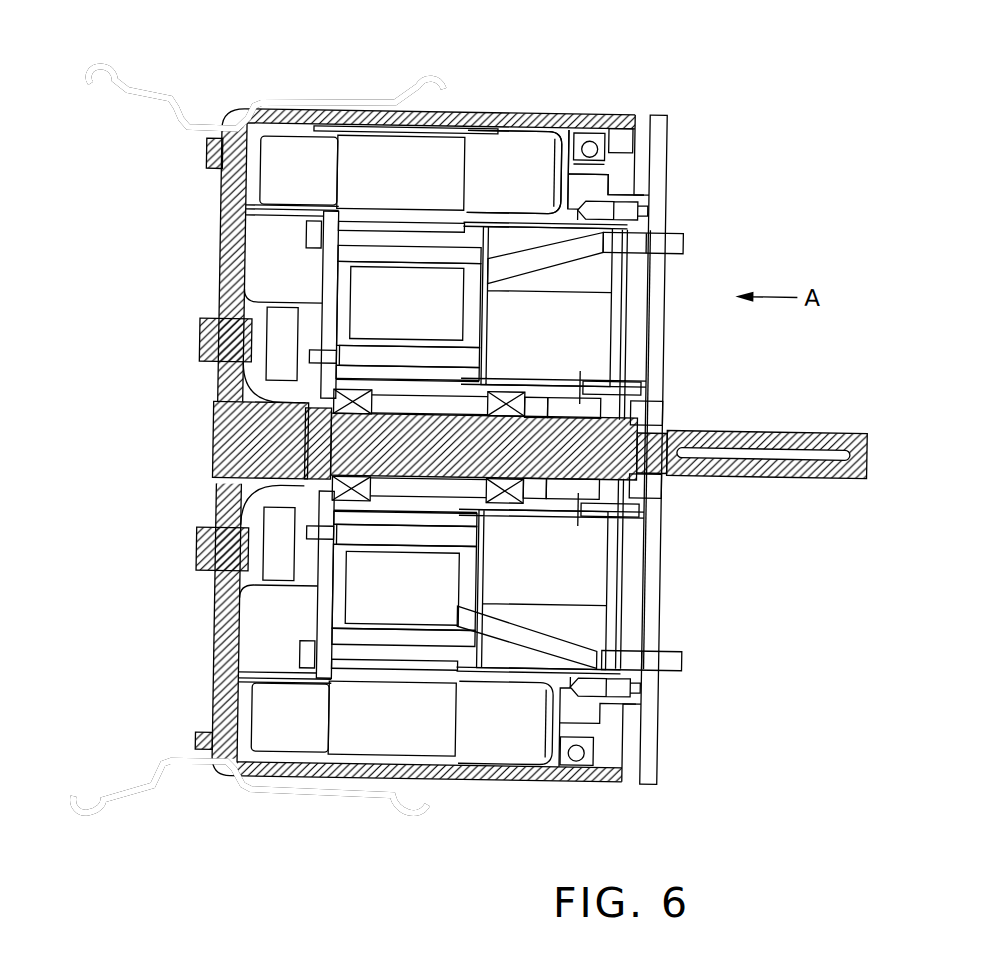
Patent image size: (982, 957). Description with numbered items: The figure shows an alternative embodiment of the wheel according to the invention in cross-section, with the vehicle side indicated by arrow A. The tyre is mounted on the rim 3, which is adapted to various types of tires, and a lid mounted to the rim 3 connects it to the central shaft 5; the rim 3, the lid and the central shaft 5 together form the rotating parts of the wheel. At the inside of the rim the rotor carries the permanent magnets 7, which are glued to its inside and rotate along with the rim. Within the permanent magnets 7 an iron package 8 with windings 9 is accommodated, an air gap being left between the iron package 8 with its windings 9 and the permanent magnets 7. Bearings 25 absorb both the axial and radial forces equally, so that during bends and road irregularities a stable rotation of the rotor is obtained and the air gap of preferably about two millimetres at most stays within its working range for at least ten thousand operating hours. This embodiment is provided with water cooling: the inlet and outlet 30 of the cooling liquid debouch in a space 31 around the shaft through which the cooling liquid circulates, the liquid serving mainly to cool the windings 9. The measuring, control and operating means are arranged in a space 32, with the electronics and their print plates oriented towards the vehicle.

The rim 3 is at (436, 78).
The central shaft 5 is at (762, 428).
The permanent magnets 7 is at (462, 124).
The iron package 8 is at (516, 152).
The windings 9 is at (440, 175).
The bearings 25 is at (585, 147).
The inlet and outlet 30 is at (680, 239).
The space around the shaft 31 is at (363, 291).
The space for measuring, control and operating means 32 is at (585, 342).